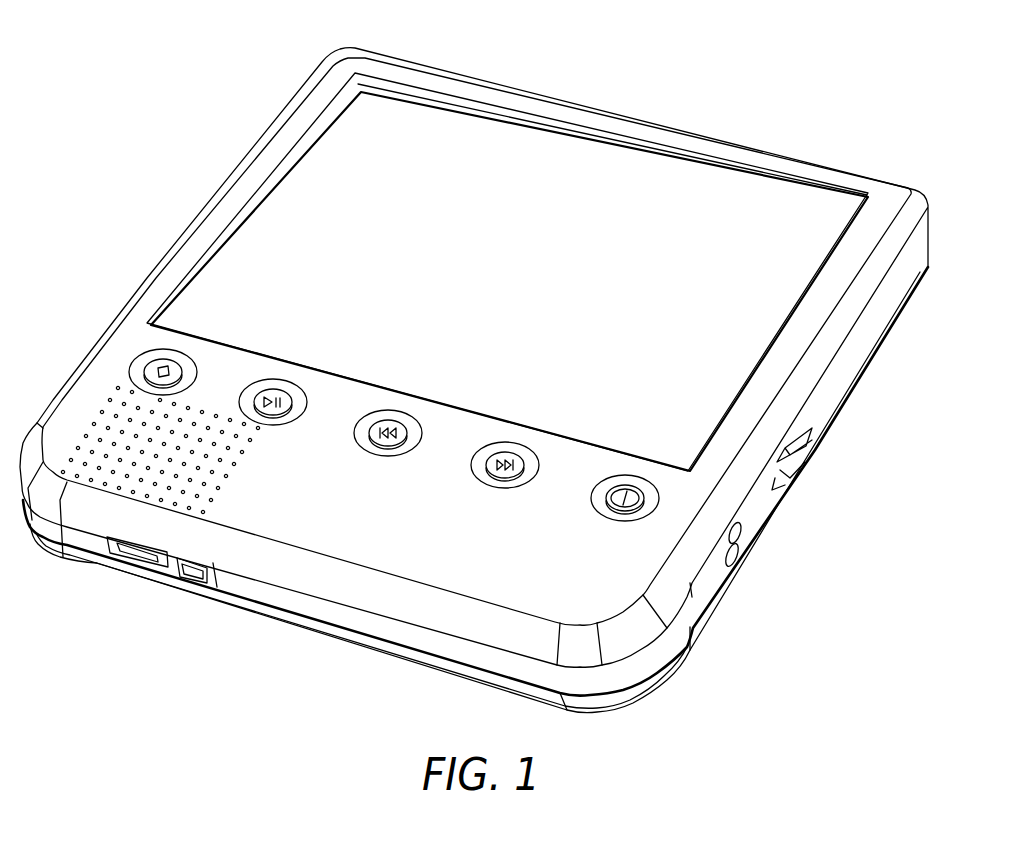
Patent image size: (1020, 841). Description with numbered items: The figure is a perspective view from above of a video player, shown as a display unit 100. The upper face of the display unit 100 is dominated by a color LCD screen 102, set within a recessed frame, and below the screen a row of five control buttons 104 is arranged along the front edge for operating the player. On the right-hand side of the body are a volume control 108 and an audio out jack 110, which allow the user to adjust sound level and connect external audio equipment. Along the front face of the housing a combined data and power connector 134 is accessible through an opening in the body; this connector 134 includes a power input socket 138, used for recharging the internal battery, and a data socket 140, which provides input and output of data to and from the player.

The display unit 100 is at (474, 370).
The color LCD screen 102 is at (432, 128).
The control buttons 104 is at (490, 494).
The volume control 108 is at (790, 472).
The audio out jack 110 is at (740, 568).
The combined data and power connector 134 is at (160, 560).
The power input socket 138 is at (200, 570).
The data socket 140 is at (112, 558).